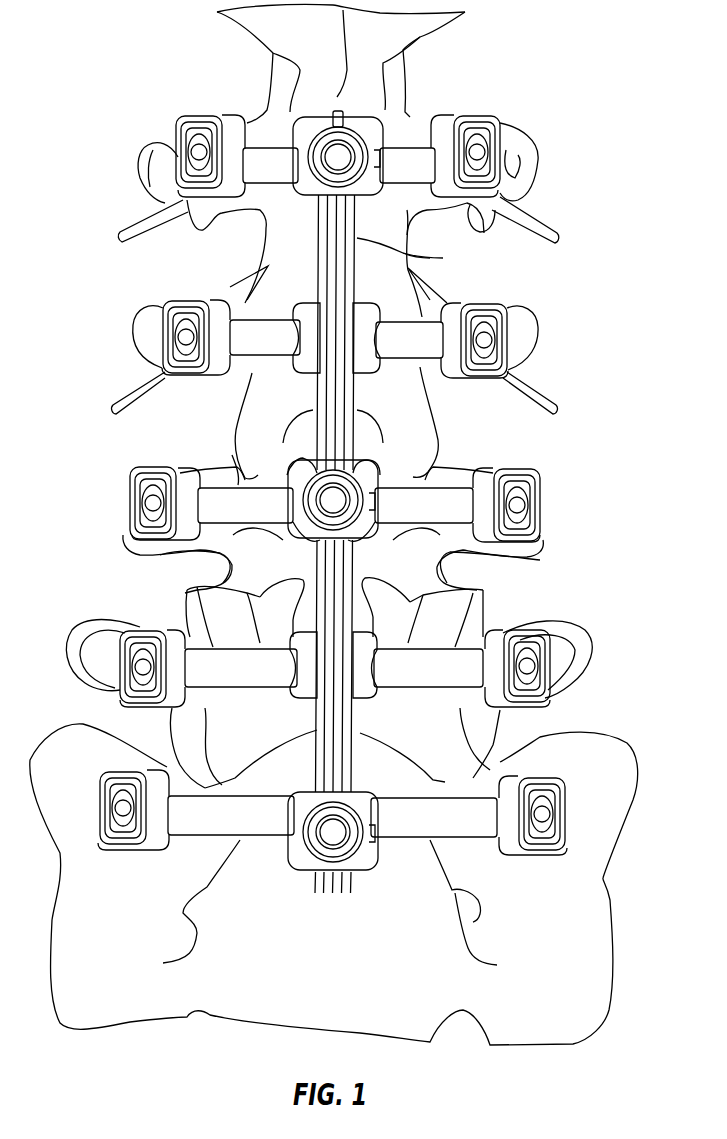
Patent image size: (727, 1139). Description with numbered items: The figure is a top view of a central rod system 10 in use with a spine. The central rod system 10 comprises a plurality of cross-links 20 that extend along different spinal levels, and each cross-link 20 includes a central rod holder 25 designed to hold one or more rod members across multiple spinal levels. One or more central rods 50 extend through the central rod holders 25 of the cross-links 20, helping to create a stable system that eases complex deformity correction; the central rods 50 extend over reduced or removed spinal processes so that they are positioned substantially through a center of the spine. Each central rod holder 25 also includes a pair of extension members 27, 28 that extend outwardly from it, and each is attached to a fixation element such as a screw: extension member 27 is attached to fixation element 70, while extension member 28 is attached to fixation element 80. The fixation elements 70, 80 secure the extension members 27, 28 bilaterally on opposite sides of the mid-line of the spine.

The central rod system 10 is at (490, 118).
The cross-link 20 is at (218, 115).
The central rod holder 25 is at (368, 108).
The extension member 27 is at (267, 148).
The extension member 28 is at (427, 147).
The central rod 50 is at (430, 258).
The fixation element 70 is at (187, 117).
The fixation element 80 is at (502, 125).